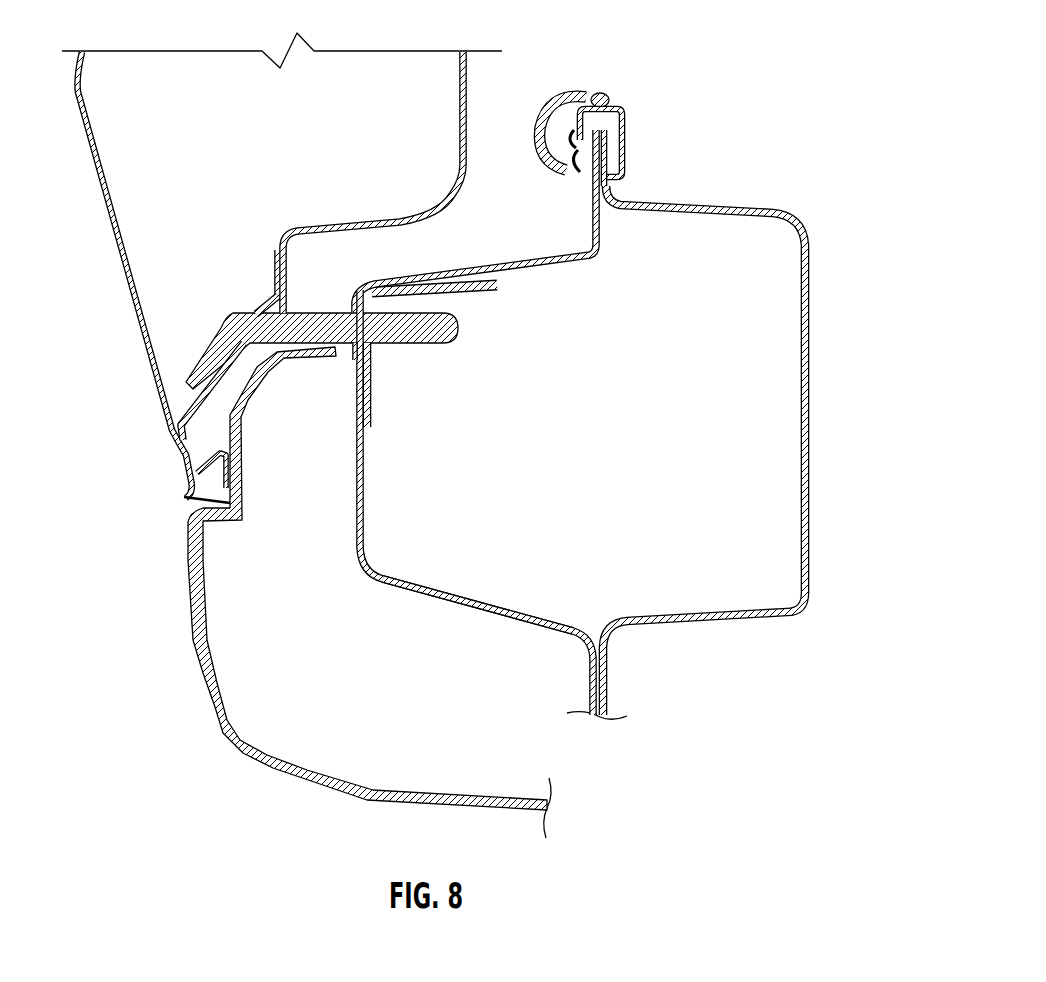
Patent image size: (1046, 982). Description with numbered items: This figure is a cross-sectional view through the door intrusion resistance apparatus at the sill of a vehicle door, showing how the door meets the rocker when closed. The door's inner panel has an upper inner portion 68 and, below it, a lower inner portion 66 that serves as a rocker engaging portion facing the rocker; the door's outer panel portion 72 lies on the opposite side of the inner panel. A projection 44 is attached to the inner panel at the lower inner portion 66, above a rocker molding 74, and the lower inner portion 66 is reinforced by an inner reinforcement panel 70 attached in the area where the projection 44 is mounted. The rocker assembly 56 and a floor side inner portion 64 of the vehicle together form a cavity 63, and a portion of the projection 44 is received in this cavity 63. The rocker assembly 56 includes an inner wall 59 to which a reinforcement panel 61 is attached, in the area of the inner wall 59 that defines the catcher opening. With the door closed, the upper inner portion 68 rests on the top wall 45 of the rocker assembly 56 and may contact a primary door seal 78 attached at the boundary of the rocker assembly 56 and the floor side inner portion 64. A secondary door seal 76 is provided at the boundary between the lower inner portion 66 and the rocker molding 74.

The projection 44 is at (455, 343).
The top wall 45 is at (465, 274).
The rocker assembly 56 is at (470, 615).
The inner wall 59 is at (425, 587).
The reinforcement panel 61 is at (375, 408).
The cavity 63 is at (627, 496).
The floor side inner portion 64 is at (808, 497).
The lower inner portion 66 is at (262, 250).
The upper inner portion 68 is at (298, 222).
The inner reinforcement panel 70 is at (264, 283).
The outer panel portion 72 is at (147, 357).
The rocker molding 74 is at (208, 713).
The secondary door seal 76 is at (176, 498).
The primary door seal 78 is at (628, 112).